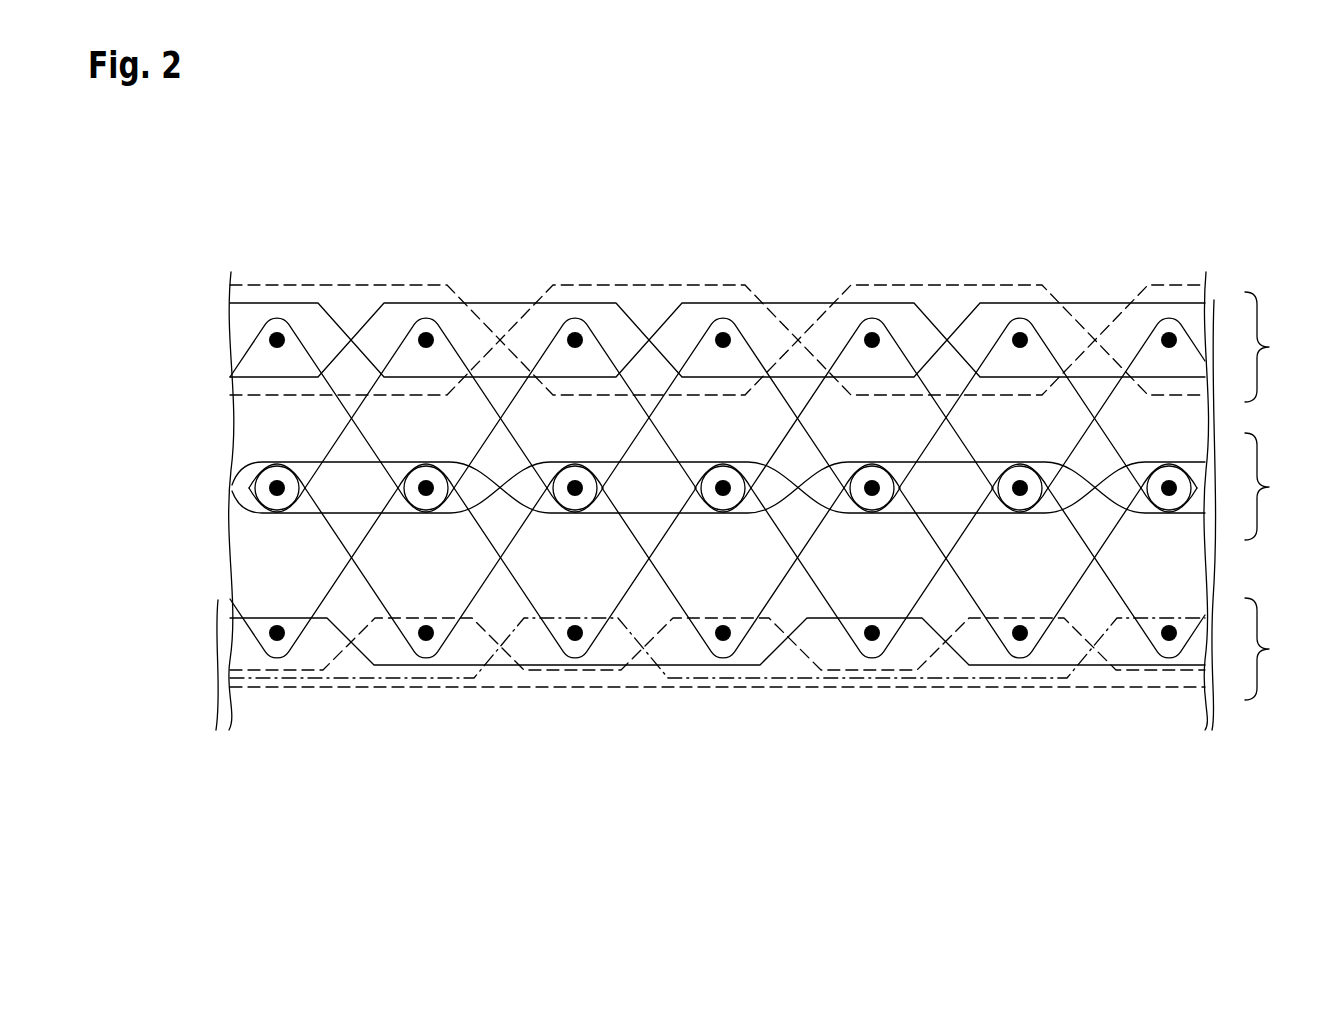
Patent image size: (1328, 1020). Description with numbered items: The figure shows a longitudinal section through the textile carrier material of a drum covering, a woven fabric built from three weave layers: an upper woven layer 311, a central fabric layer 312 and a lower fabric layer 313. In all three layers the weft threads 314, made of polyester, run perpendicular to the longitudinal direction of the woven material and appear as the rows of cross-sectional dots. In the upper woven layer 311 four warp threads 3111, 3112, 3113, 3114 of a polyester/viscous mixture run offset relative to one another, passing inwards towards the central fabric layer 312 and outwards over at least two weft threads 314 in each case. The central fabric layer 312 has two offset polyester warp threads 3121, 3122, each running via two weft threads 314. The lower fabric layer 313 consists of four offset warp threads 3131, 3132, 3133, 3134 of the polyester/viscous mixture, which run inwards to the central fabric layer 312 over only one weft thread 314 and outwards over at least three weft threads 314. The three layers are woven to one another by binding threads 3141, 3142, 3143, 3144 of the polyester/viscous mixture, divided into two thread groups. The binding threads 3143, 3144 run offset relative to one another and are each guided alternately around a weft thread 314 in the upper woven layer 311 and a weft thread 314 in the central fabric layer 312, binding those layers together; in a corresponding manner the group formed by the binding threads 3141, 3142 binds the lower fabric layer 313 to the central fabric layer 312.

The upper woven layer 311 is at (773, 343).
The central fabric layer 312 is at (773, 486).
The lower fabric layer 313 is at (773, 649).
The weft thread 314 is at (278, 331).
The warp thread 3111 is at (348, 285).
The warp thread 3112 is at (650, 285).
The warp thread 3113 is at (795, 303).
The warp thread 3114 is at (1088, 303).
The warp thread 3121 is at (573, 461).
The warp thread 3122 is at (887, 461).
The warp thread 3131 is at (350, 690).
The warp thread 3132 is at (772, 680).
The warp thread 3133 is at (940, 675).
The warp thread 3134 is at (1097, 667).
The binding thread 3141 is at (251, 616).
The binding thread 3142 is at (249, 517).
The binding thread 3143 is at (247, 460).
The binding thread 3144 is at (254, 358).